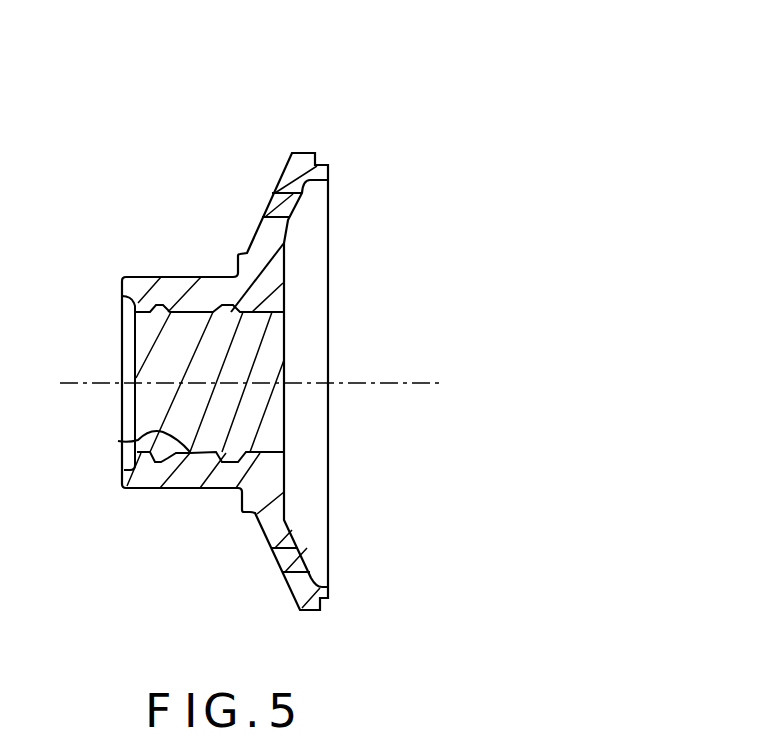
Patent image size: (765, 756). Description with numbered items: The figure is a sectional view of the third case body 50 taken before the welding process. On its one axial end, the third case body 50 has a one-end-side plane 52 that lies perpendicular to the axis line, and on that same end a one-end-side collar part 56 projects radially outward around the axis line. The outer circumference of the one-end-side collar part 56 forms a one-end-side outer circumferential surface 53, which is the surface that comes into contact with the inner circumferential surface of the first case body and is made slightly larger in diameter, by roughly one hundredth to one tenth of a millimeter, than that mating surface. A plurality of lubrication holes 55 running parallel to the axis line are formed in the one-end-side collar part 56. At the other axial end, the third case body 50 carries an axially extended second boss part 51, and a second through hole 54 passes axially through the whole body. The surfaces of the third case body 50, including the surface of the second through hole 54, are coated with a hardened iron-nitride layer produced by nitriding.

The third case body 50 is at (363, 127).
The second boss part 51 is at (150, 489).
The one-end-side plane 52 is at (284, 268).
The one-end-side outer circumferential surface 53 is at (302, 152).
The second through hole 54 is at (118, 441).
The lubrication holes 55 is at (276, 196).
The one-end-side collar part 56 is at (290, 597).